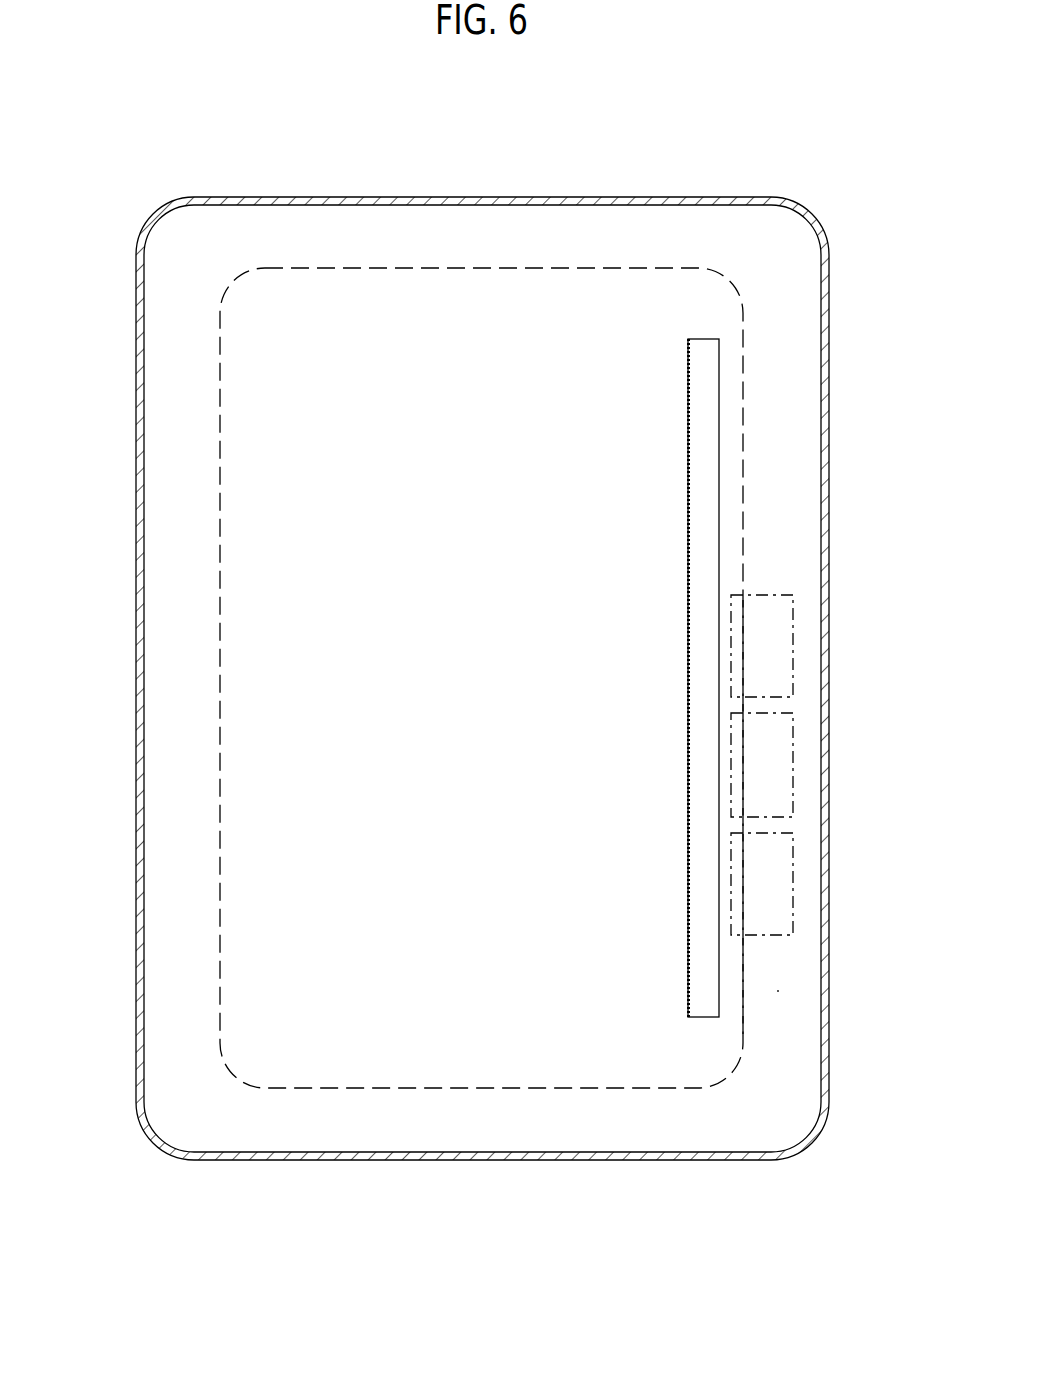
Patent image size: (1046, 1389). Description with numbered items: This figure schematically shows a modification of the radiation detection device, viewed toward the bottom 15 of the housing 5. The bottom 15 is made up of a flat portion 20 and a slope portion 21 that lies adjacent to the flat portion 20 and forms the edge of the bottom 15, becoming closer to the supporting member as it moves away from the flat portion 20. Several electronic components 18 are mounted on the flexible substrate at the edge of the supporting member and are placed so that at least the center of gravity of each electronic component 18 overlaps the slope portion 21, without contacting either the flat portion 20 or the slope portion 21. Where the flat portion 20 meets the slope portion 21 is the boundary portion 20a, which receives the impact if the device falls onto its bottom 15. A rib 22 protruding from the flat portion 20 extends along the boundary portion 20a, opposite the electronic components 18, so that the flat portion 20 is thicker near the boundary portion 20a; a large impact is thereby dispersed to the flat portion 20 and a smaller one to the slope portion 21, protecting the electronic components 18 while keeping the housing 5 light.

The housing 5 is at (164, 201).
The bottom 15 is at (867, 1285).
The electronic component 18 is at (793, 665).
The flat portion 20 is at (472, 990).
The boundary portion 20a is at (732, 987).
The slope portion 21 is at (778, 990).
The rib 22 is at (700, 982).